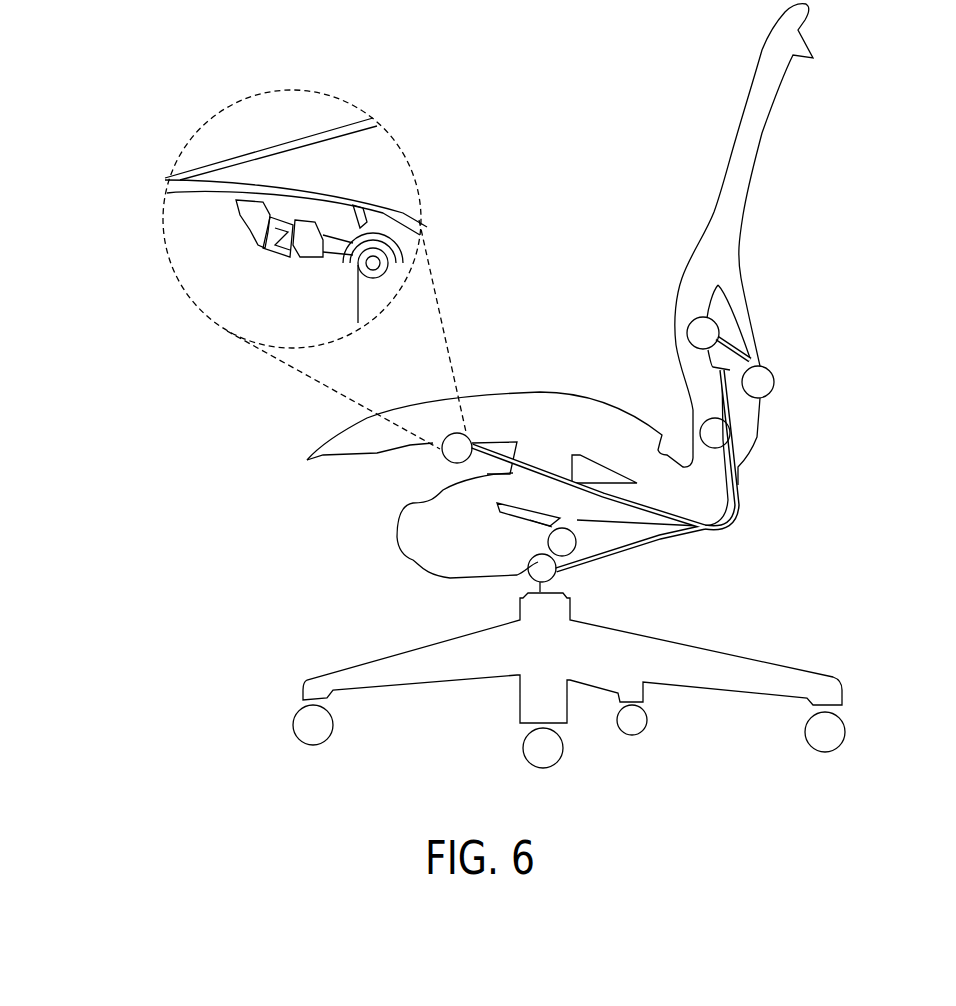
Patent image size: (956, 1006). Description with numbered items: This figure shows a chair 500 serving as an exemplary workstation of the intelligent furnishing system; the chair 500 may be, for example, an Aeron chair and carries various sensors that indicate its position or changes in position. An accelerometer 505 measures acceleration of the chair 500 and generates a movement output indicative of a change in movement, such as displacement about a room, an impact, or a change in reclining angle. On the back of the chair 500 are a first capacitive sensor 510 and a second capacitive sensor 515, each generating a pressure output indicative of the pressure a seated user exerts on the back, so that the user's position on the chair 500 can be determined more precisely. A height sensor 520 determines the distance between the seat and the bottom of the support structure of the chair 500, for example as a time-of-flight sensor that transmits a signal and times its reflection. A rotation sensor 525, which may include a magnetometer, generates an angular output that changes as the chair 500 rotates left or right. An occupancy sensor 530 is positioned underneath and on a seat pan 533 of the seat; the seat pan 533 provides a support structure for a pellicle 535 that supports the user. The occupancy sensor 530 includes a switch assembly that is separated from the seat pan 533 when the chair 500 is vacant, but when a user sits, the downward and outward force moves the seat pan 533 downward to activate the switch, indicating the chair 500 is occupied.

The chair 500 is at (120, 230).
The accelerometer 505 is at (762, 385).
The first capacitive sensor 510 is at (706, 330).
The second capacitive sensor 515 is at (718, 440).
The height sensor 520 is at (550, 578).
The rotation sensor 525 is at (575, 552).
The occupancy sensor 530 is at (463, 440).
The seat pan 533 is at (302, 142).
The pellicle 535 is at (389, 151).